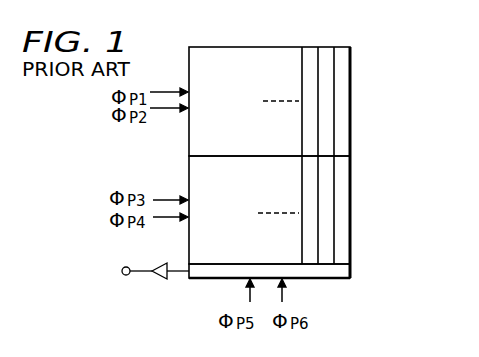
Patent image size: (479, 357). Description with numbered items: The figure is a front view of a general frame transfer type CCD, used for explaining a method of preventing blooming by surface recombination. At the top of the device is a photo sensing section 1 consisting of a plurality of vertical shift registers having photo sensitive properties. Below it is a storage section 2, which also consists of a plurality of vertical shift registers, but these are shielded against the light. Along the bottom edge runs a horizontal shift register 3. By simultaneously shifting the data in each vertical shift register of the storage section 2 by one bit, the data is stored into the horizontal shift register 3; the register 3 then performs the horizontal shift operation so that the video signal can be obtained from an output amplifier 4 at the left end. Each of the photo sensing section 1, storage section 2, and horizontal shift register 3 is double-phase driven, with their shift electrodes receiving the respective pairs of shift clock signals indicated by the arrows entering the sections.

The photo sensing section 1 is at (351, 100).
The storage section 2 is at (351, 199).
The horizontal shift register 3 is at (351, 268).
The output amplifier 4 is at (159, 280).